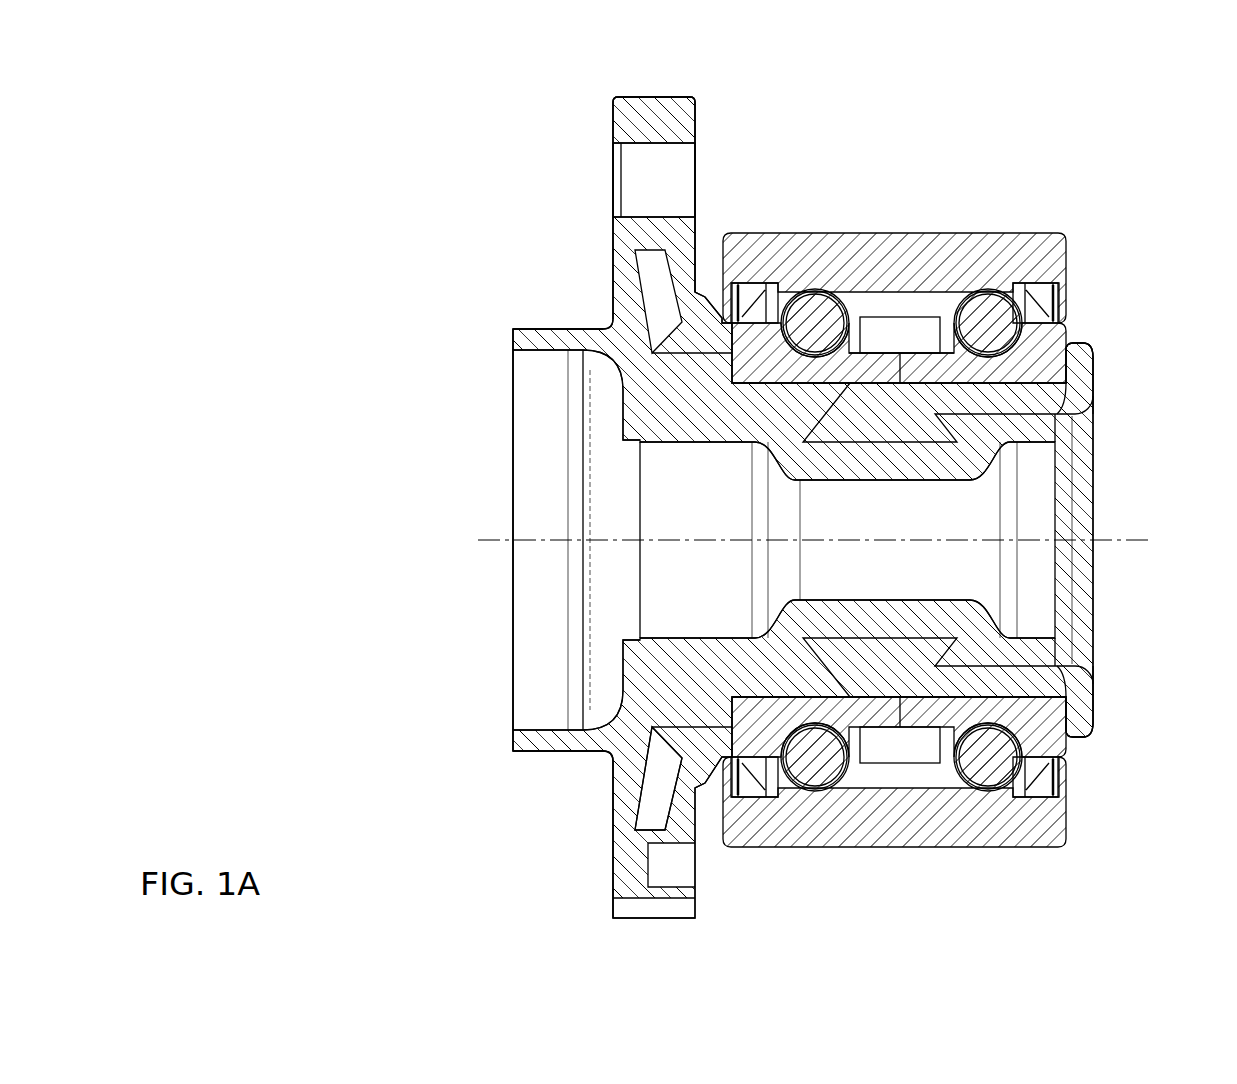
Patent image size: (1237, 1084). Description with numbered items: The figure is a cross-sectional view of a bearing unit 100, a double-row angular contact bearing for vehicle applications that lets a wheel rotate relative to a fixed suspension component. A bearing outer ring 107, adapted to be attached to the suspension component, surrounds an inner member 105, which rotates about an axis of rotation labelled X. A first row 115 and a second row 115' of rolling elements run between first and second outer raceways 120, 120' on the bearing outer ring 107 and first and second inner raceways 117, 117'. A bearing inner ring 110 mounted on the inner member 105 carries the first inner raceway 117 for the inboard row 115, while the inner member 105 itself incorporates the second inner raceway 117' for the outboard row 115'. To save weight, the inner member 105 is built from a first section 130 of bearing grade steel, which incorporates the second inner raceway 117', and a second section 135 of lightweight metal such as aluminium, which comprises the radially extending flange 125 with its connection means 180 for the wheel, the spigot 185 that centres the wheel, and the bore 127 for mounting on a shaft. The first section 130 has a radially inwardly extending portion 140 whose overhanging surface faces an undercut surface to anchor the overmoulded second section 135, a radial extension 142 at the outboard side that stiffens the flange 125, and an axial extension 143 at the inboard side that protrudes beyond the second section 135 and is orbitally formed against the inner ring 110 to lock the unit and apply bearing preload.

The bearing unit 100 is at (1084, 200).
The inner member 105 is at (545, 240).
The bearing outer ring 107 is at (1042, 822).
The bearing inner ring 110 is at (1032, 348).
The first row of rolling elements 115 is at (940, 256).
The second row of rolling elements 115' is at (800, 261).
The first inner raceway 117 is at (1125, 396).
The second inner raceway 117' is at (888, 438).
The first outer raceway 120 is at (961, 813).
The second outer raceway 120' is at (849, 813).
The flange 125 is at (643, 128).
The bore 127 is at (693, 582).
The first section 130 is at (750, 363).
The second section 135 is at (680, 398).
The radially inwardly extending portion 140 is at (888, 652).
The radial extension 142 is at (657, 795).
The axial extension 143 is at (1086, 708).
The connection means 180 is at (637, 182).
The spigot 185 is at (577, 740).